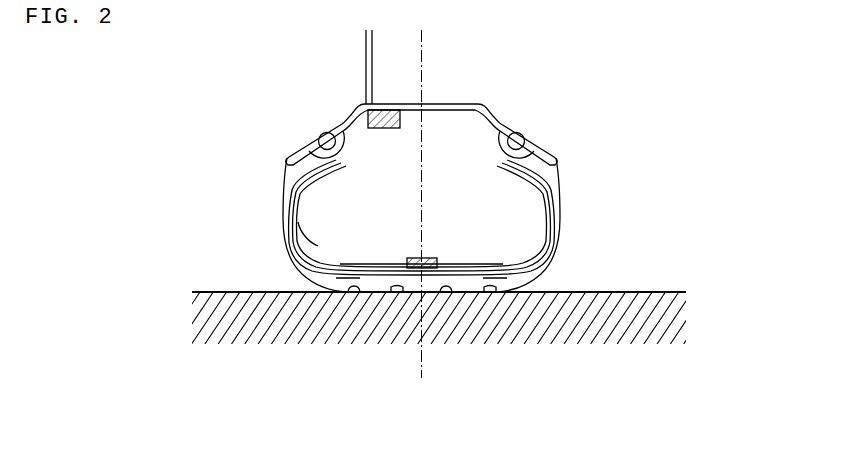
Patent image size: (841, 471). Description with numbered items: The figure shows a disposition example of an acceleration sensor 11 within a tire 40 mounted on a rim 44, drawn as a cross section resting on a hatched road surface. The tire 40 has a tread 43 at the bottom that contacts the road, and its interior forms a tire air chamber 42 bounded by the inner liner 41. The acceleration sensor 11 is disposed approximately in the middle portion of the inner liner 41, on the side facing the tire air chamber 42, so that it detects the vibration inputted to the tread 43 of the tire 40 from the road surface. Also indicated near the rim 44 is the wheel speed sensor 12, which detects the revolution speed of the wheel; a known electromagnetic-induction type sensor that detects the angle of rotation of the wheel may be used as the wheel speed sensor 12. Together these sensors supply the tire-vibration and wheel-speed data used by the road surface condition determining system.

The tire 40 is at (433, 237).
The inner liner 41 is at (377, 263).
The tire air chamber 42 is at (350, 235).
The tread 43 is at (385, 274).
The rim 44 is at (458, 104).
The acceleration sensor 11 is at (440, 258).
The wheel speed sensor 12 is at (385, 110).